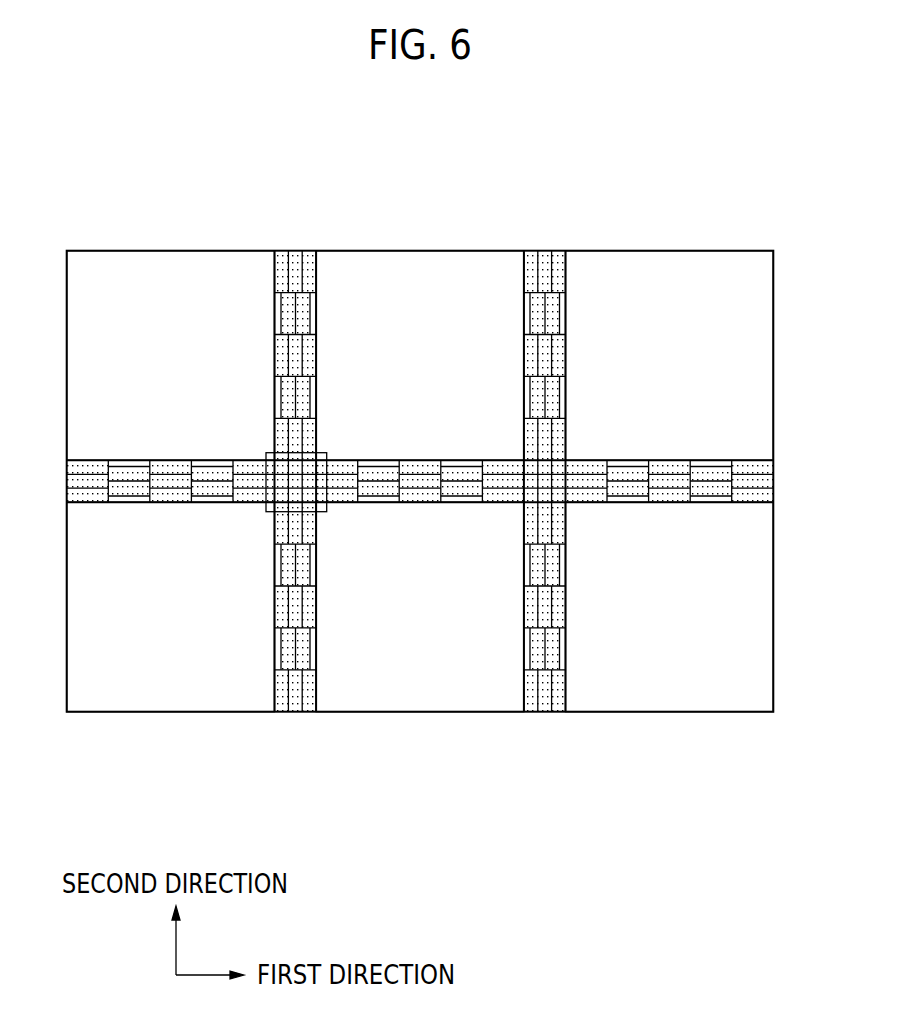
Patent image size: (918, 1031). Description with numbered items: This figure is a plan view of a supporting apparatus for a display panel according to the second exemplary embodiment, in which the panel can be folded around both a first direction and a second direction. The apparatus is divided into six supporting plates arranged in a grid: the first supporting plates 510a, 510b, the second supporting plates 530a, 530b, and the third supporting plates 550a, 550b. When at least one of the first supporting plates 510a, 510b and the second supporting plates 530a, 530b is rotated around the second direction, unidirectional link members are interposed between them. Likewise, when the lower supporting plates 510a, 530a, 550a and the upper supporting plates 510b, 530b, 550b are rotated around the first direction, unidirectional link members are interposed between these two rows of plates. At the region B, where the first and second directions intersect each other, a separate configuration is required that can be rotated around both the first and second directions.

The 1-1-th supporting plate 510a is at (93, 702).
The 1-2-th supporting plate 510b is at (207, 257).
The 2-1-th supporting plate 530a is at (447, 704).
The 2-2-th supporting plate 530b is at (427, 257).
The 3-1-th supporting plate 550a is at (677, 703).
The 3-2-th supporting plate 550b is at (653, 258).
The region B is at (327, 452).